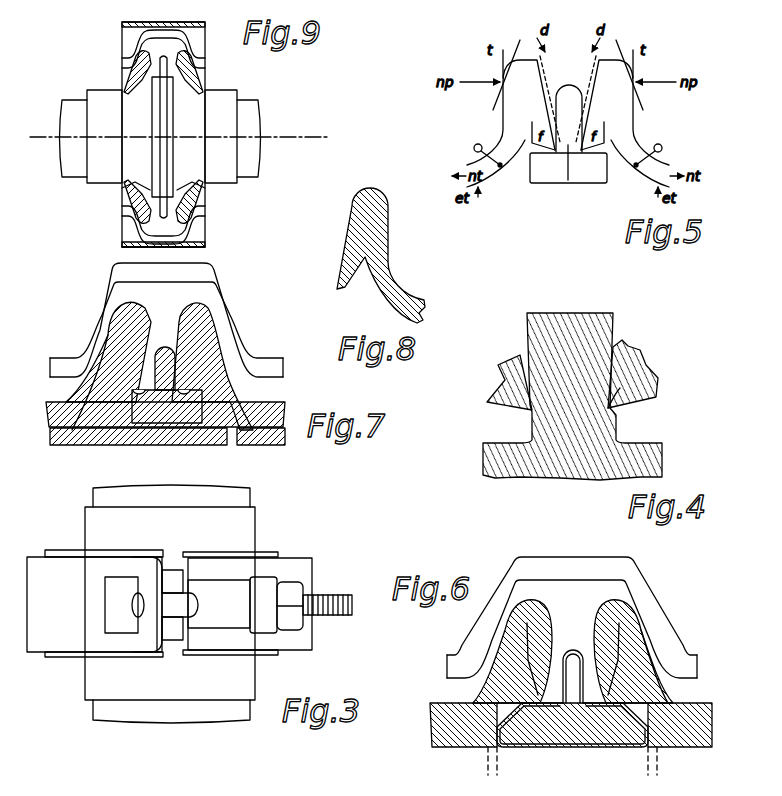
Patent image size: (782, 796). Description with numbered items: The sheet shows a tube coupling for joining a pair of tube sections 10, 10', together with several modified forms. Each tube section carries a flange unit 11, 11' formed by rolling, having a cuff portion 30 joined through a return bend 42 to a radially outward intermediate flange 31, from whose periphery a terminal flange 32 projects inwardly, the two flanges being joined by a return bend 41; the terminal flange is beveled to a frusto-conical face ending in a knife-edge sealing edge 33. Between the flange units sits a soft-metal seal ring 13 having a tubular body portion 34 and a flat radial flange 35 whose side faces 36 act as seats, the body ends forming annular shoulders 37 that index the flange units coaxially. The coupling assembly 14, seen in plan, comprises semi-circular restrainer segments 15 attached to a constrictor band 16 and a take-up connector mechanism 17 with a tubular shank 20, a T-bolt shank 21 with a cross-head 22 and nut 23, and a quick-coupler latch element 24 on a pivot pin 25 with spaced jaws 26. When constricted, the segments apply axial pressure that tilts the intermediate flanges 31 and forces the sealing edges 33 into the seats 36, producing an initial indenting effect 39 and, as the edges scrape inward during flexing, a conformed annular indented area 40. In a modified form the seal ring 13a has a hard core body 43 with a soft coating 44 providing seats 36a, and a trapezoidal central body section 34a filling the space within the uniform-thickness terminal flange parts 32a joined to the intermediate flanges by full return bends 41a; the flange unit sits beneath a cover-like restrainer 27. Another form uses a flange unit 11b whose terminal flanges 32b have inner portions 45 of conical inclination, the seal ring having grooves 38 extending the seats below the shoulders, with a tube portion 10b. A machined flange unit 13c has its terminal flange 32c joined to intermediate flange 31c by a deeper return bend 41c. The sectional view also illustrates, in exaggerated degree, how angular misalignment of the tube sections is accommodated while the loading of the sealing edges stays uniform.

In FIG. 9, the tube section 10 is at (262, 138).
In FIG. 7, the tube section 10 is at (265, 450).
In FIG. 3, the tube section 10 is at (188, 496).
In FIG. 9, the tube section 10' is at (57, 138).
In FIG. 7, the tube section 10' is at (38, 451).
In FIG. 3, the tube section 10' is at (173, 726).
In FIG. 7, the shaft portion 10b is at (205, 446).
In FIG. 9, the flange unit 11 is at (204, 191).
In FIG. 9, the flange unit 11' is at (103, 193).
In FIG. 7, the flange unit 11b is at (220, 335).
In FIG. 9, the seal ring 13 is at (170, 95).
In FIG. 7, the seal ring 13 is at (168, 425).
In FIG. 6, the seal ring 13a is at (580, 628).
In FIG. 8, the flange unit 13c is at (400, 257).
In FIG. 9, the coupling assembly 14 is at (192, 235).
In FIG. 3, the coupling assembly 14 is at (112, 670).
In FIG. 9, the restrainer segment 15 is at (132, 27).
In FIG. 7, the restrainer segment 15 is at (78, 302).
In FIG. 3, the restrainer segment 15 is at (232, 657).
In FIG. 9, the constrictor band 16 is at (123, 245).
In FIG. 3, the constrictor band 16 is at (300, 558).
In FIG. 3, the take-up connector mechanism 17 is at (300, 633).
In FIG. 3, the tubular shank 20 is at (222, 592).
In FIG. 3, the T-bolt shank 21 is at (191, 608).
In FIG. 3, the cross-head 22 is at (108, 608).
In FIG. 3, the nut 23 is at (301, 592).
In FIG. 3, the quick-coupler latch element 24 is at (105, 552).
In FIG. 3, the pivot pin 25 is at (65, 550).
In FIG. 3, the jaws 26 is at (147, 645).
In FIG. 6, the cover 27 is at (662, 619).
In FIG. 9, the cuff portion 30 is at (228, 183).
In FIG. 5, the cuff portion 30 is at (676, 176).
In FIG. 7, the cuff portion 30 is at (278, 405).
In FIG. 3, the cuff portion 30 is at (256, 520).
In FIG. 6, the cuff portion 30 is at (712, 715).
In FIG. 9, the intermediate flange 31 is at (208, 137).
In FIG. 5, the intermediate flange 31 is at (625, 116).
In FIG. 7, the intermediate flange 31 is at (97, 343).
In FIG. 6, the intermediate flange 31 is at (638, 668).
In FIG. 8, the intermediate flange 31c is at (386, 268).
In FIG. 9, the terminal flange 32 is at (123, 77).
In FIG. 5, the terminal flange 32 is at (590, 92).
In FIG. 6, the terminal flange part 32a is at (525, 660).
In FIG. 7, the terminal flange 32b is at (152, 327).
In FIG. 8, the terminal flange 32c is at (345, 255).
In FIG. 5, the sealing edge 33 is at (600, 150).
In FIG. 8, the sealing edge 33 is at (337, 290).
In FIG. 4, the sealing edge 33 is at (515, 410).
In FIG. 5, the tubular body portion 34 is at (597, 176).
In FIG. 4, the tubular body portion 34 is at (663, 458).
In FIG. 6, the central body section 34a is at (612, 751).
In FIG. 5, the radial flange 35 is at (565, 172).
In FIG. 4, the radial flange 35 is at (572, 312).
In FIG. 5, the side face 36 is at (569, 118).
In FIG. 4, the side face 36 is at (616, 320).
In FIG. 6, the seat 36a is at (570, 655).
In FIG. 5, the annular shoulder 37 is at (545, 152).
In FIG. 7, the annular shoulder 37 is at (130, 400).
In FIG. 7, the groove 38 is at (150, 420).
In FIG. 4, the indenting effect 39 is at (630, 348).
In FIG. 4, the annular indented area 40 is at (612, 398).
In FIG. 7, the return bend 41 is at (86, 390).
In FIG. 6, the return bend 41a is at (530, 612).
In FIG. 8, the return bend 41c is at (368, 192).
In FIG. 6, the return bend 42 is at (652, 704).
In FIG. 6, the core body 43 is at (568, 750).
In FIG. 6, the coating 44 is at (530, 750).
In FIG. 7, the inner portion 45 is at (150, 360).